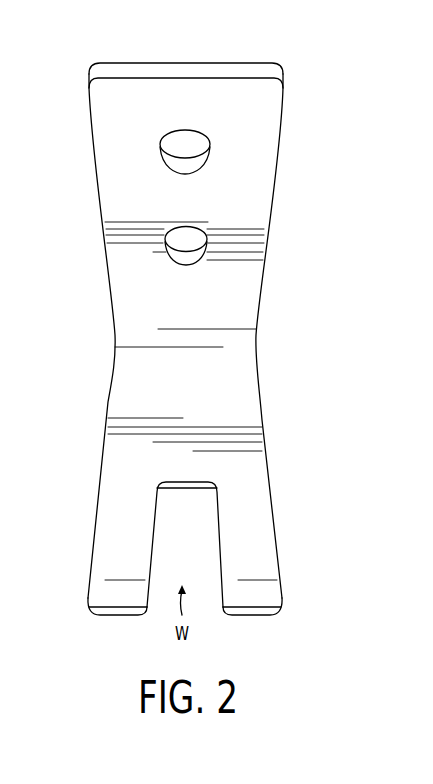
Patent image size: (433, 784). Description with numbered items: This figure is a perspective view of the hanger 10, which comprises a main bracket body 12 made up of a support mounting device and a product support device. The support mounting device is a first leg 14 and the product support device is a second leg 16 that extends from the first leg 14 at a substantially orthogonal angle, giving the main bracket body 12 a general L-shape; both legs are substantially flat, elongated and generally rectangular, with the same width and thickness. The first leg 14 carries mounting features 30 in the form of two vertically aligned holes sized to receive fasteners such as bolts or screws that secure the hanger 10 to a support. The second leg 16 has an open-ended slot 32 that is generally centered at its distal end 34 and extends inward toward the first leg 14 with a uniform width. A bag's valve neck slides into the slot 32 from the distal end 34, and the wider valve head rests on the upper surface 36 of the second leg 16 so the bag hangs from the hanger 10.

The hanger 10 is at (44, 84).
The main bracket body 12 is at (260, 336).
The first leg 14 is at (113, 191).
The second leg 16 is at (118, 442).
The mounting features 30 is at (203, 167).
The open-ended slot 32 is at (200, 534).
The distal end 34 is at (272, 615).
The upper surface 36 is at (197, 396).